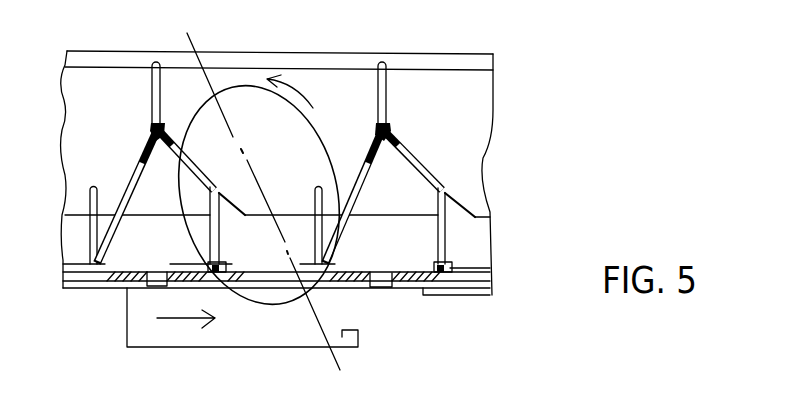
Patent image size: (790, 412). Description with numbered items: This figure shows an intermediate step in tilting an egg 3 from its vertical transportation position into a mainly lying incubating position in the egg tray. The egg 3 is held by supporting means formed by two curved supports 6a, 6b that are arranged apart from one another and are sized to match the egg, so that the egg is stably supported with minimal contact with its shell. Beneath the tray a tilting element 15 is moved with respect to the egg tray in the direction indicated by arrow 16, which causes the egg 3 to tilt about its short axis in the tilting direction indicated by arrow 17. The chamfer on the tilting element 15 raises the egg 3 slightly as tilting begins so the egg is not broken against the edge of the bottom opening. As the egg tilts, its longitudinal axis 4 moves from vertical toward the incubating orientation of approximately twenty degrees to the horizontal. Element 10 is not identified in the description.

The egg 3 is at (207, 115).
The longitudinal axis 4 is at (193, 45).
The curved support 6a is at (210, 237).
The curved support 6b is at (345, 241).
The guide rail 10 is at (423, 295).
The tilting element 15 is at (356, 329).
The arrow 16 is at (186, 329).
The arrow 17 is at (307, 94).